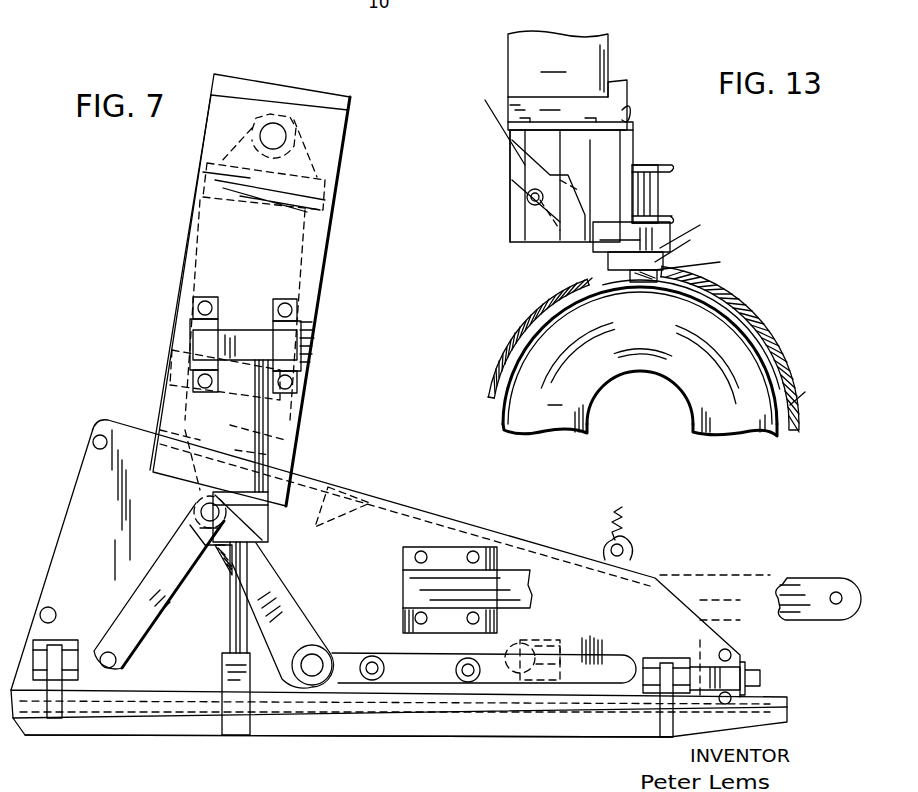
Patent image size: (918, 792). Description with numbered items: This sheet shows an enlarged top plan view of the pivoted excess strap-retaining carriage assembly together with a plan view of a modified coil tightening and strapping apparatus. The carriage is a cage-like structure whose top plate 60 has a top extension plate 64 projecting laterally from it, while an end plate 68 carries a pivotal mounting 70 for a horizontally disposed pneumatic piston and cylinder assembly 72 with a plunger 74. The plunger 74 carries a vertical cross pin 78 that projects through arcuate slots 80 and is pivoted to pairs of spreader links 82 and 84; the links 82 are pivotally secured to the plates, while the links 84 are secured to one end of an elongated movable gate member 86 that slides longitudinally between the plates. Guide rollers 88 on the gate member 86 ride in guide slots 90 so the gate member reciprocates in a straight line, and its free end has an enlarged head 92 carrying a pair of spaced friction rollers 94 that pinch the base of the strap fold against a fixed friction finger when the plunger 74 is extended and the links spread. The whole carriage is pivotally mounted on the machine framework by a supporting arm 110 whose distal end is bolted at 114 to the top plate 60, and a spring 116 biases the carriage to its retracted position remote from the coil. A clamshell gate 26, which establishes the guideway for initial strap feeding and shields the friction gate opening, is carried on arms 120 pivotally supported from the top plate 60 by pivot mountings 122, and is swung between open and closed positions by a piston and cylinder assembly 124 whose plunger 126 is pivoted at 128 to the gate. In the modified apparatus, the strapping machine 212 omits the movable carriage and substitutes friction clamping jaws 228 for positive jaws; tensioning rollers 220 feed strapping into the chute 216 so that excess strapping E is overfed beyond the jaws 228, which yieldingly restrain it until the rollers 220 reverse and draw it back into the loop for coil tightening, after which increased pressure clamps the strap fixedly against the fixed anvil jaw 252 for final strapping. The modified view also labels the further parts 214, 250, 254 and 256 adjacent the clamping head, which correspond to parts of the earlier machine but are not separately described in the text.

In FIG. 7, the clamshell gates 26 is at (155, 728).
In FIG. 7, the top plate 60 is at (128, 438).
In FIG. 7, the top extension plate 64 is at (322, 166).
In FIG. 7, the end plate 68 is at (292, 92).
In FIG. 7, the pivotal mounting 70 is at (286, 139).
In FIG. 7, the piston and cylinder assembly 72 is at (297, 279).
In FIG. 7, the plunger 74 is at (296, 440).
In FIG. 7, the cross pin 78 is at (200, 508).
In FIG. 7, the arcuate slots 80 is at (288, 586).
In FIG. 7, the spreader links 82 is at (130, 610).
In FIG. 7, the spreader links 84 is at (298, 636).
In FIG. 7, the movable gate member 86 is at (425, 653).
In FIG. 7, the guide rollers 88 is at (372, 655).
In FIG. 7, the guide slots 90 is at (598, 650).
In FIG. 7, the enlarged head 92 is at (540, 650).
In FIG. 7, the friction rollers 94 is at (545, 630).
In FIG. 7, the supporting arm 110 is at (515, 565).
In FIG. 7, the bolted connection 114 is at (421, 550).
In FIG. 7, the spring 116 is at (630, 535).
In FIG. 7, the arms 120 is at (667, 725).
In FIG. 7, the pivot mountings 122 is at (70, 638).
In FIG. 7, the piston and cylinder assembly 124 is at (278, 408).
In FIG. 7, the plunger 126 is at (232, 632).
In FIG. 7, the pivot 128 is at (232, 735).
In FIG. 13, the strapping machine 212 is at (640, 88).
In FIG. 13, the feeler 214 is at (682, 239).
In FIG. 13, the chute 216 is at (748, 300).
In FIG. 13, the tensioning rollers 220 is at (525, 235).
In FIG. 13, the clamping jaws 228 is at (698, 253).
In FIG. 13, the head block 250 is at (660, 228).
In FIG. 13, the fixed anvil jaw 252 is at (610, 262).
In FIG. 13, the contact 254 is at (644, 283).
In FIG. 13, the cylinder 256 is at (660, 180).
In FIG. 13, the excess strapping E is at (712, 280).